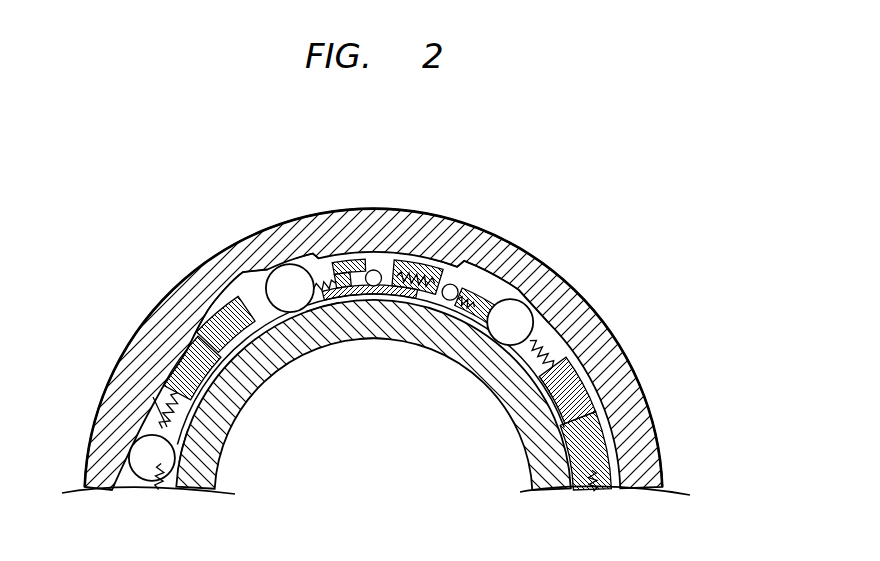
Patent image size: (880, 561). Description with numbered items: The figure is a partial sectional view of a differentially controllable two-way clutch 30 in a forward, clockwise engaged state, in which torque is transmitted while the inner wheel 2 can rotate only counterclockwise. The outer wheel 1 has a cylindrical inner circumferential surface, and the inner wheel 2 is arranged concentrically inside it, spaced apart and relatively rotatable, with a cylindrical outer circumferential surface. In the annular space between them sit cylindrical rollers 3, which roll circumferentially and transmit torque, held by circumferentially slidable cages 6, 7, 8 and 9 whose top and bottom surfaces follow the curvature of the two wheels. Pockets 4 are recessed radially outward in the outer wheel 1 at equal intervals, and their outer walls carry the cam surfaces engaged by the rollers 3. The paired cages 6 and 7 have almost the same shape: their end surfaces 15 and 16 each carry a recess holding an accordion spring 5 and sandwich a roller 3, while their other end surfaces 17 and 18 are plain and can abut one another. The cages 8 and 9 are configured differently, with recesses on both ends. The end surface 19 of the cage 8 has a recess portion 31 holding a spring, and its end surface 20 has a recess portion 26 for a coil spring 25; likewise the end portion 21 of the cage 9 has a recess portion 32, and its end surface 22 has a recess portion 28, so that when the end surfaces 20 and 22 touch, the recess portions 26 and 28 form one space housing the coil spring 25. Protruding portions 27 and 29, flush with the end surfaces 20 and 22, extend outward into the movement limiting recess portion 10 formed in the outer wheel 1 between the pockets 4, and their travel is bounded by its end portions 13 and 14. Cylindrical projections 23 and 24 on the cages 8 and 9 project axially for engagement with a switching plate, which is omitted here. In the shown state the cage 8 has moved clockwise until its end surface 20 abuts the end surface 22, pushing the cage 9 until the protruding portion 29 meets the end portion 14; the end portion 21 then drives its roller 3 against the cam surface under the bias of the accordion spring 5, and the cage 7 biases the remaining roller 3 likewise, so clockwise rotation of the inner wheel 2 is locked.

The outer wheel 1 is at (647, 398).
The inner wheel 2 is at (237, 400).
The roller 3 is at (258, 263).
The pocket 4 is at (240, 280).
The accordion spring 5 is at (273, 365).
The cage 6 is at (168, 370).
The cage 7 is at (225, 327).
The cage 8 is at (358, 345).
The cage 9 is at (527, 252).
The movement limiting recess portion 10 is at (385, 262).
The end portion 13 is at (291, 282).
The end portion 14 is at (462, 280).
The end surface 15 is at (138, 417).
The end surface 16 is at (243, 272).
The end surface 17 is at (180, 322).
The end surface 18 is at (223, 425).
The end surface 19 is at (322, 280).
The end surface 20 is at (410, 318).
The end portion 21 is at (553, 277).
The end surface 22 is at (375, 335).
The projection 23 is at (352, 266).
The projection 24 is at (522, 262).
The coil spring 25 is at (493, 283).
The recess portion 26 is at (392, 272).
The protruding portion 27 is at (415, 270).
The recess portion 28 is at (440, 335).
The protruding portion 29 is at (447, 292).
The two-way clutch 30 is at (592, 163).
The recess portion 31 is at (330, 340).
The recess portion 32 is at (477, 360).